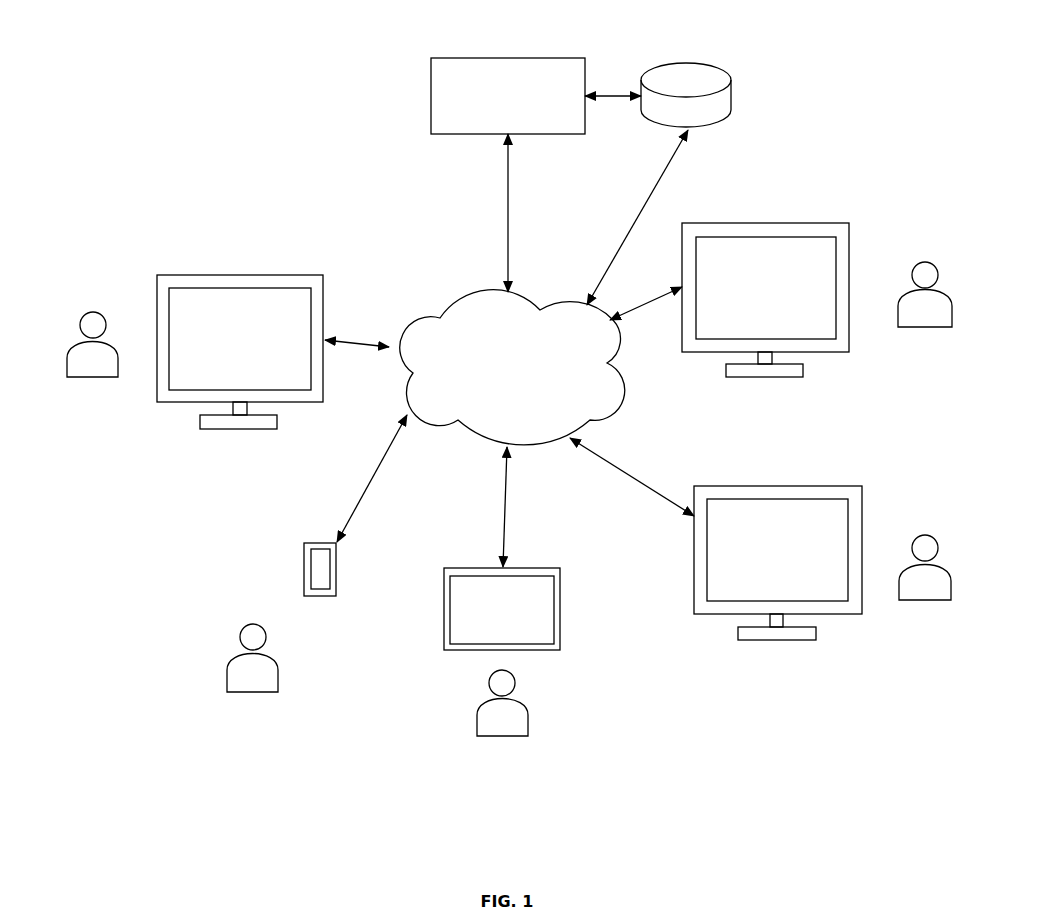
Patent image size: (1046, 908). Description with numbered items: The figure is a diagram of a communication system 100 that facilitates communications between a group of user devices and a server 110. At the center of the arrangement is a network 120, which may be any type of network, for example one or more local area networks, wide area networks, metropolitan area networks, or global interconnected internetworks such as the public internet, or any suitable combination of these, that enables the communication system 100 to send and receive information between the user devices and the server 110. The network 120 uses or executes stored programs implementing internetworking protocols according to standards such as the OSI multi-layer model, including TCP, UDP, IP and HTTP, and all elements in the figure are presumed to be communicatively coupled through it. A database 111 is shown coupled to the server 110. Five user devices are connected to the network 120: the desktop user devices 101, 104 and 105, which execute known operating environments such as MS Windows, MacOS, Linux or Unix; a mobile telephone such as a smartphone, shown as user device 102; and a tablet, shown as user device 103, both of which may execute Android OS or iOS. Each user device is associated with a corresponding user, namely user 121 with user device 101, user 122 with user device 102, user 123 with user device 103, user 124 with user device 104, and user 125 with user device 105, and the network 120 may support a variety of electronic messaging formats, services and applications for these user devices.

The communication system 100 is at (286, 87).
The server 110 is at (562, 57).
The database 111 is at (724, 67).
The network 120 is at (443, 312).
The user device 101 is at (185, 273).
The user device 102 is at (317, 543).
The user device 103 is at (555, 567).
The user device 104 is at (836, 486).
The user device 105 is at (823, 223).
The user 121 is at (63, 350).
The user 122 is at (280, 682).
The user 123 is at (528, 715).
The user 124 is at (950, 572).
The user 125 is at (955, 297).